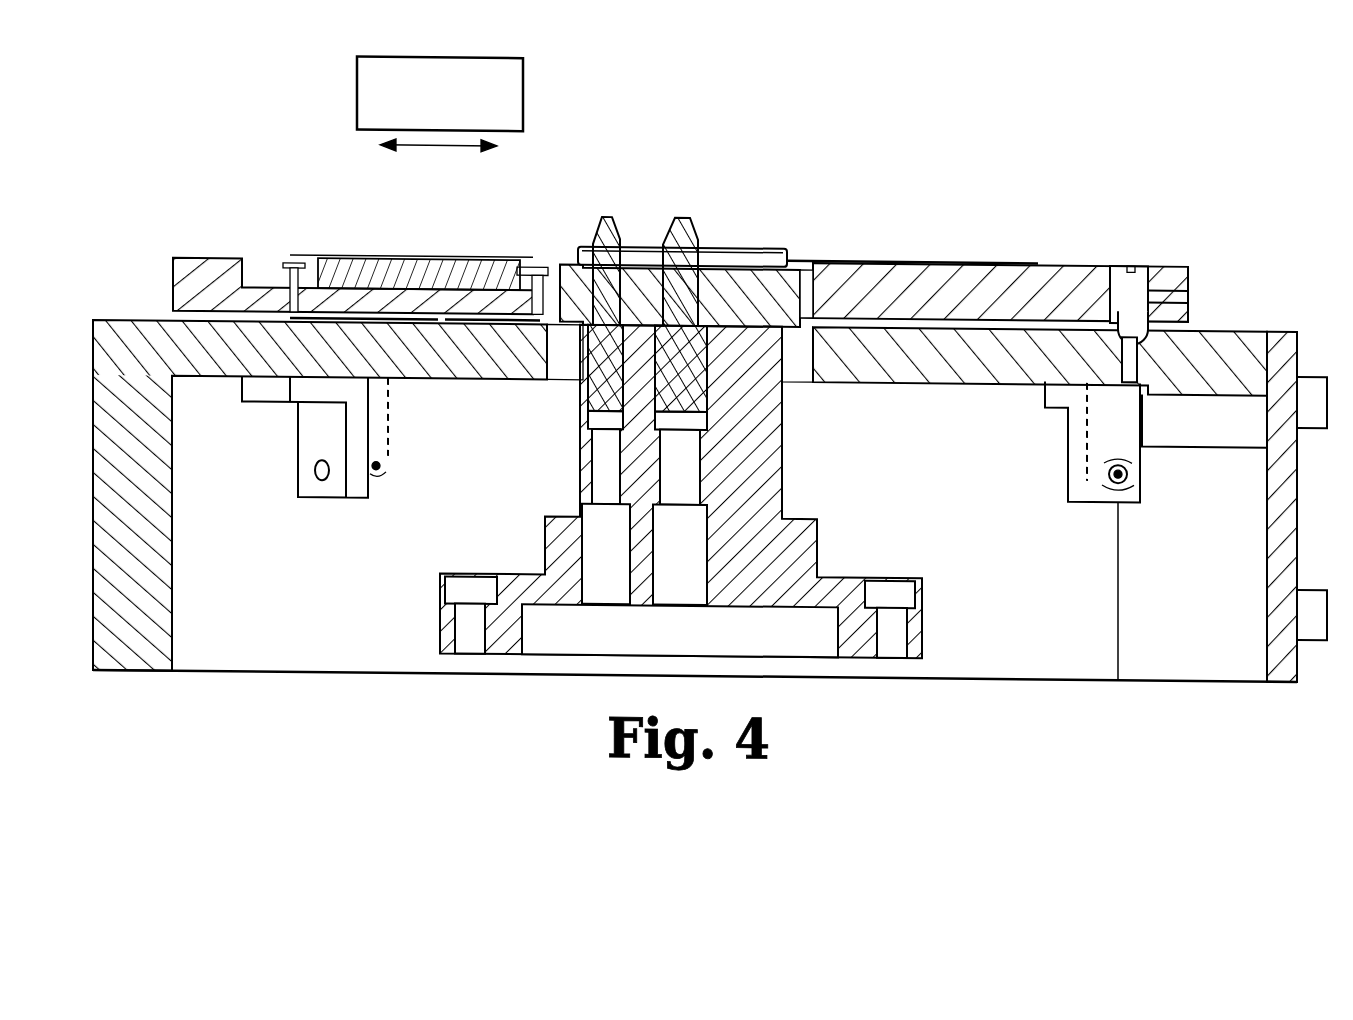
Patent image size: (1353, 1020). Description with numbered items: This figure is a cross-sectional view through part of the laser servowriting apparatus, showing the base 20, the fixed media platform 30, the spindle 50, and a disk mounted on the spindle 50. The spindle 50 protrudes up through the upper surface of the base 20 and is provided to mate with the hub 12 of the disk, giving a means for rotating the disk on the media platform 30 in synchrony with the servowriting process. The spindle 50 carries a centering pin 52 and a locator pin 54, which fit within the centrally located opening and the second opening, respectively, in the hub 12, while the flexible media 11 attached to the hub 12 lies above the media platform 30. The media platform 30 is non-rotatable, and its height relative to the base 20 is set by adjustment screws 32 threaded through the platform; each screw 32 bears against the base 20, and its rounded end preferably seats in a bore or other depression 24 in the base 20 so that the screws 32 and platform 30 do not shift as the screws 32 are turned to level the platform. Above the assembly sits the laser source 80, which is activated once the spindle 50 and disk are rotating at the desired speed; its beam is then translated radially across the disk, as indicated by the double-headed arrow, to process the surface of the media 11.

The flexible media portion 11 is at (958, 253).
The hub 12 is at (748, 249).
The base 20 is at (125, 318).
The bore or other depression 24 is at (1123, 351).
The media platform 30 is at (1072, 255).
The adjustment screws 32 is at (1137, 255).
The spindle 50 is at (838, 525).
The centering pin 52 is at (682, 211).
The locator pin 54 is at (605, 211).
The laser source 80 is at (523, 90).